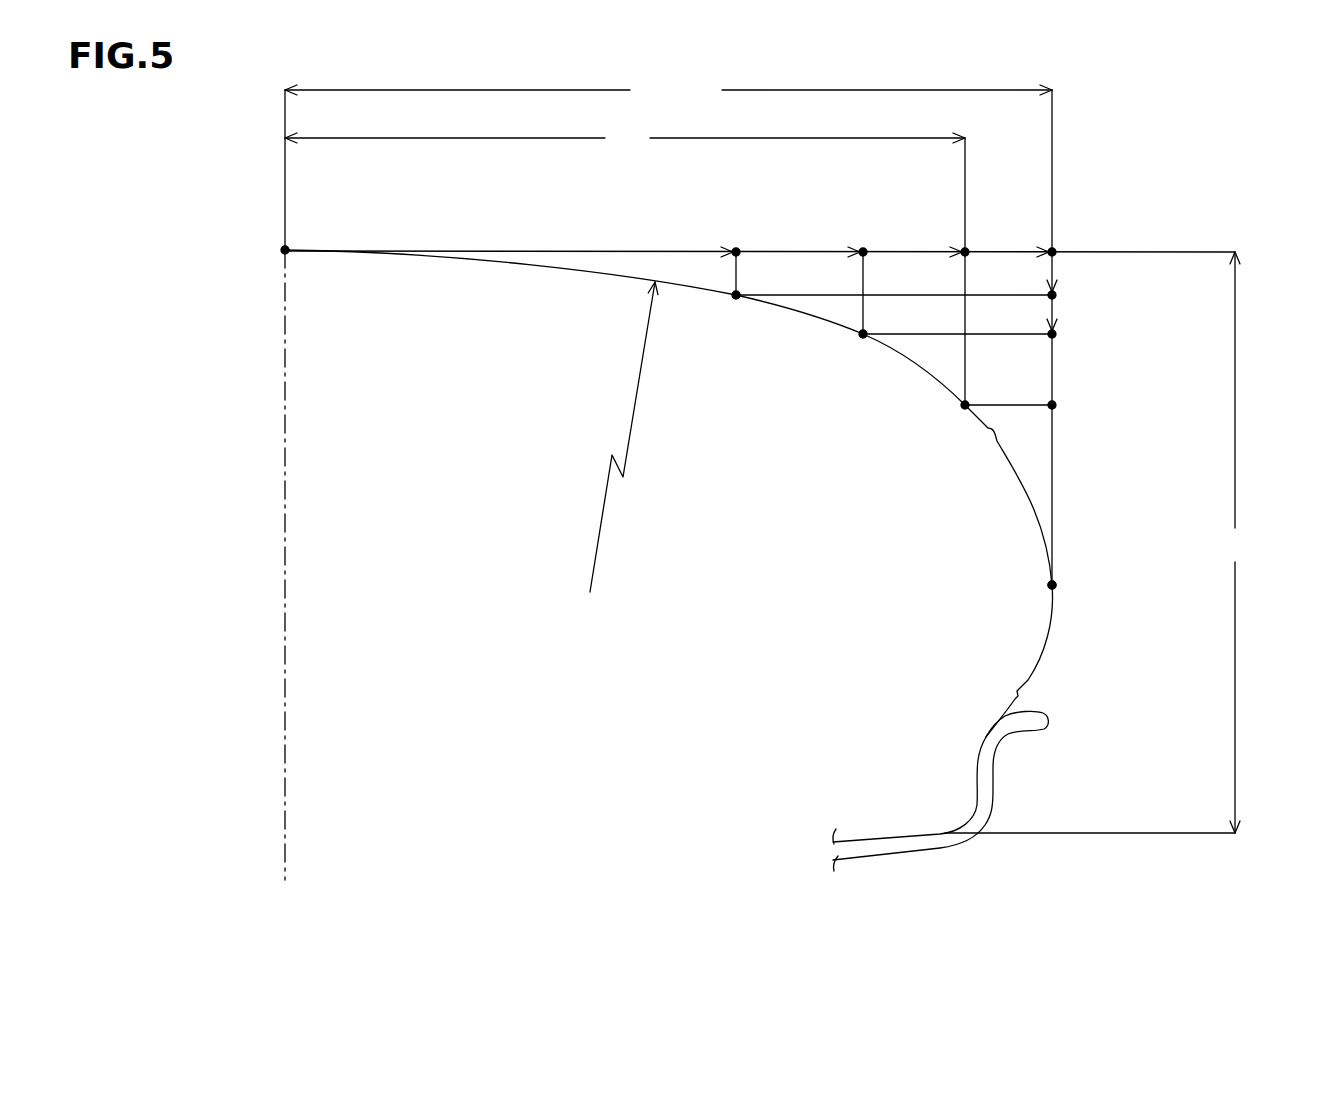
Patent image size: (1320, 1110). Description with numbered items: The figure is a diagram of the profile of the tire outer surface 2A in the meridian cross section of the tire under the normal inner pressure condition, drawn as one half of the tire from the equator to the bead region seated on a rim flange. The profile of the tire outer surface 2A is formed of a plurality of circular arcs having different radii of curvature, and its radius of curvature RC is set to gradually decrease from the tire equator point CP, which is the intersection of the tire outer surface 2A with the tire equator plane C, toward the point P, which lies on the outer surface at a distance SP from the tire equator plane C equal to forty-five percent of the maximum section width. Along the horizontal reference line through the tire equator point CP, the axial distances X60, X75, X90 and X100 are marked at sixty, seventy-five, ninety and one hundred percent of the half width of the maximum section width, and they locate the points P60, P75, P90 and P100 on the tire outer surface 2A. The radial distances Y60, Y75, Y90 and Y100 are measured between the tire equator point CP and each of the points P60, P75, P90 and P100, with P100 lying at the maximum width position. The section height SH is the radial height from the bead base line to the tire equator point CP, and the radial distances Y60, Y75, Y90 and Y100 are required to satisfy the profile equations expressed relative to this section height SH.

The tire outer surface 2A is at (598, 270).
The tire equator plane C is at (285, 545).
The tire equator point CP is at (285, 250).
The radius of curvature RC is at (633, 426).
The distance to point P SP is at (625, 139).
The section height SH is at (1098, 542).
The distance of 60% of the half width X60 is at (738, 258).
The distance of 75% of the half width X75 is at (865, 277).
The distance of 90% of the half width X90 is at (986, 271).
The distance of 100% of the half width X100 is at (1083, 337).
The radial distance to point P60 Y60 is at (1079, 295).
The radial distance to point P75 Y75 is at (1079, 334).
The radial distance to point P90 Y90 is at (1079, 405).
The radial distance to point P100 Y100 is at (1087, 585).
The point on the tire outer surface at X60 P60 is at (882, 311).
The point on the tire outer surface at X75 P75 is at (942, 350).
The point on the tire outer surface at X90 P90 is at (985, 434).
The point on the tire outer surface at X100 P100 is at (1014, 598).